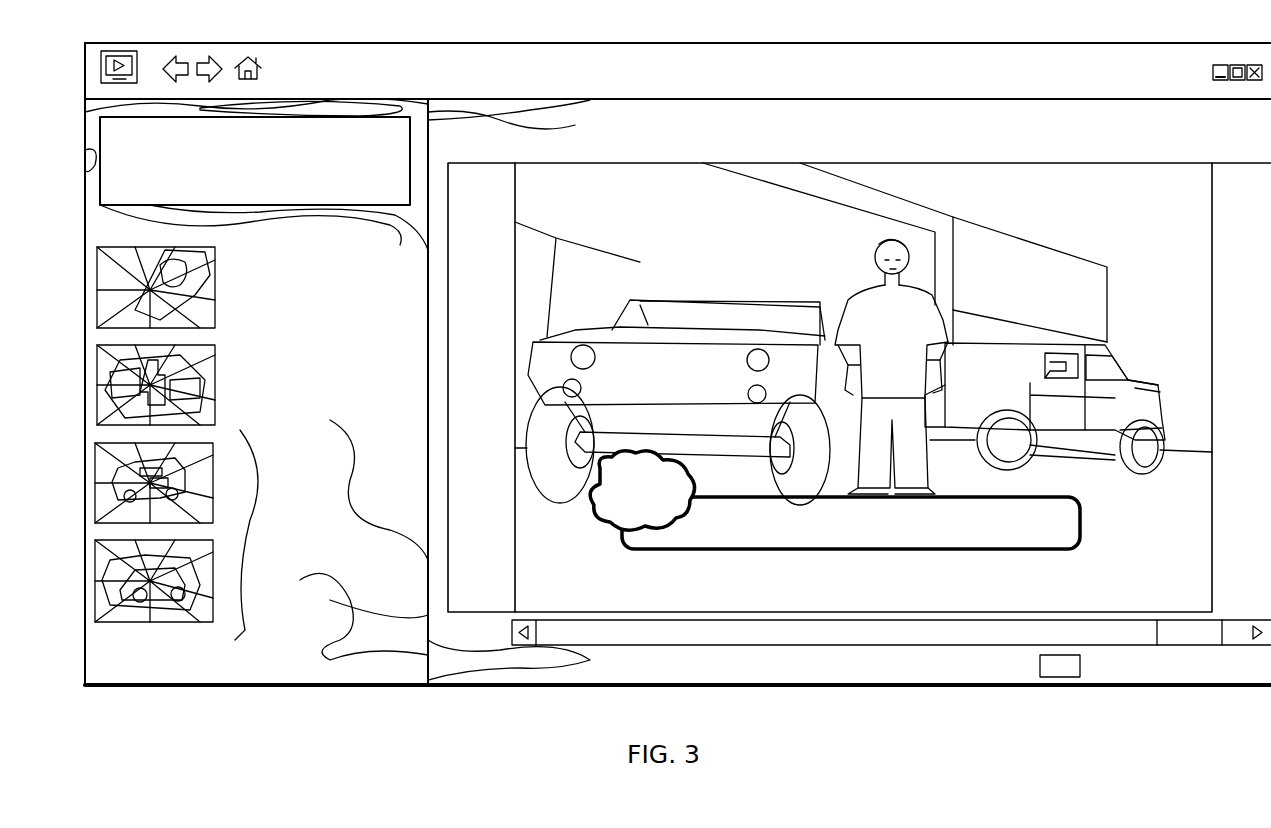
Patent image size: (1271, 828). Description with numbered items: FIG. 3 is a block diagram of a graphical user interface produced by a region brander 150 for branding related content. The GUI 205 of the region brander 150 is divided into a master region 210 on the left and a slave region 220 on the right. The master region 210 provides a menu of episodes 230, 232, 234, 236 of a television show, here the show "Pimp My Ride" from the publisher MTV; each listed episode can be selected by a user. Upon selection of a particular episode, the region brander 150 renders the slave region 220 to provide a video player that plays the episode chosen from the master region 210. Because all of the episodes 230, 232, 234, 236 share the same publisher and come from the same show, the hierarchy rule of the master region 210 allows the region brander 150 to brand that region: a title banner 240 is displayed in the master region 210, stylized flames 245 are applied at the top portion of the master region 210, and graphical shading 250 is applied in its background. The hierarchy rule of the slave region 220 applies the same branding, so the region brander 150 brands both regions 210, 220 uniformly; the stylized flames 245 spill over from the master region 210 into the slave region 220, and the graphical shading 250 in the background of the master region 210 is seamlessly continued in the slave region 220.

The region brander 150 is at (912, 85).
The GUI 205 is at (729, 84).
The master region 210 is at (268, 672).
The slave region 220 is at (886, 152).
The episode 230 is at (313, 314).
The episode 232 is at (315, 403).
The episode 234 is at (321, 512).
The episode 236 is at (325, 589).
The title banner 240 is at (354, 140).
The stylized flames 245 is at (92, 115).
The graphical shading 250 is at (212, 634).